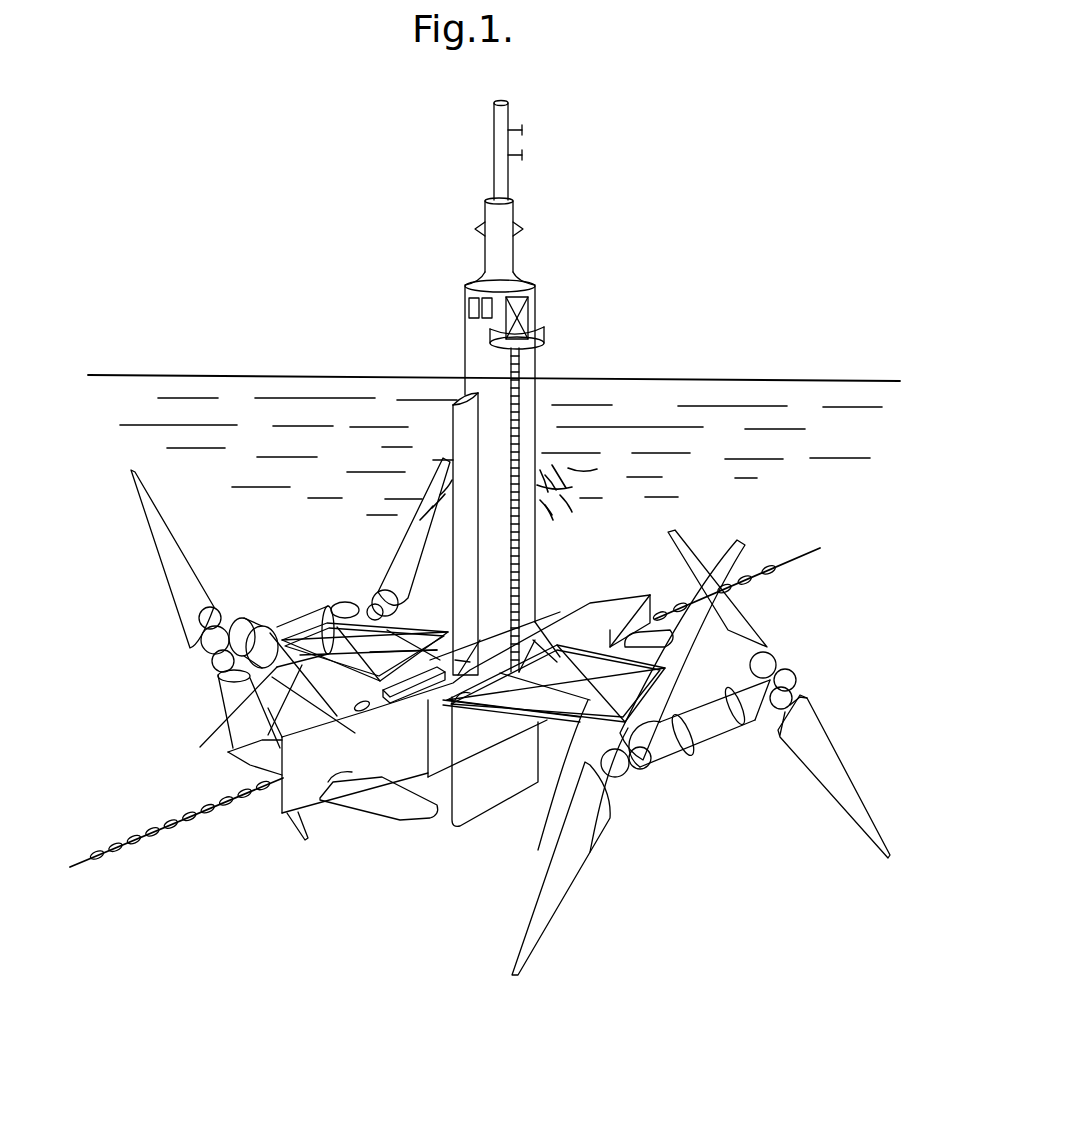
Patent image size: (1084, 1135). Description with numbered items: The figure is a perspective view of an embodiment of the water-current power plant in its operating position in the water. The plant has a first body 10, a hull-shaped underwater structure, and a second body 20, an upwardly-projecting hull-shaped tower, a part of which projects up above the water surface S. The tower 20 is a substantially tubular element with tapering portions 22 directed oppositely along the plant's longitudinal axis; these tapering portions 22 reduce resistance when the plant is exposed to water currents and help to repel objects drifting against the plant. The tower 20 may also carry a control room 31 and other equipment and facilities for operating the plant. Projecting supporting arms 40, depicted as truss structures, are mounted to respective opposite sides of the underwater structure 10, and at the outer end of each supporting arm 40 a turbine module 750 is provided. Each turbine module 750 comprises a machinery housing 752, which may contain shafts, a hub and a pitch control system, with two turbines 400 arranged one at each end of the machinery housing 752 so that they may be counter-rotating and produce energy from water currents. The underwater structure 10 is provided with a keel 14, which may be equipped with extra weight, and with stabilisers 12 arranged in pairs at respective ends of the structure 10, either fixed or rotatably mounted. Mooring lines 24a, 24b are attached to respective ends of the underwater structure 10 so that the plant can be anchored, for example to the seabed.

The water surface S is at (757, 383).
The control room 31 is at (546, 300).
The tapering portions 22 is at (460, 570).
The second body 20 is at (545, 583).
The first body 10 is at (397, 759).
The keel 14 is at (514, 787).
The stabilisers 12 is at (380, 808).
The supporting arms 40 is at (235, 725).
The machinery housing 752 is at (297, 617).
The turbine modules 750 is at (733, 895).
The turbines 400 is at (166, 538).
The mooring line 24a is at (193, 808).
The mooring line 24b is at (807, 560).